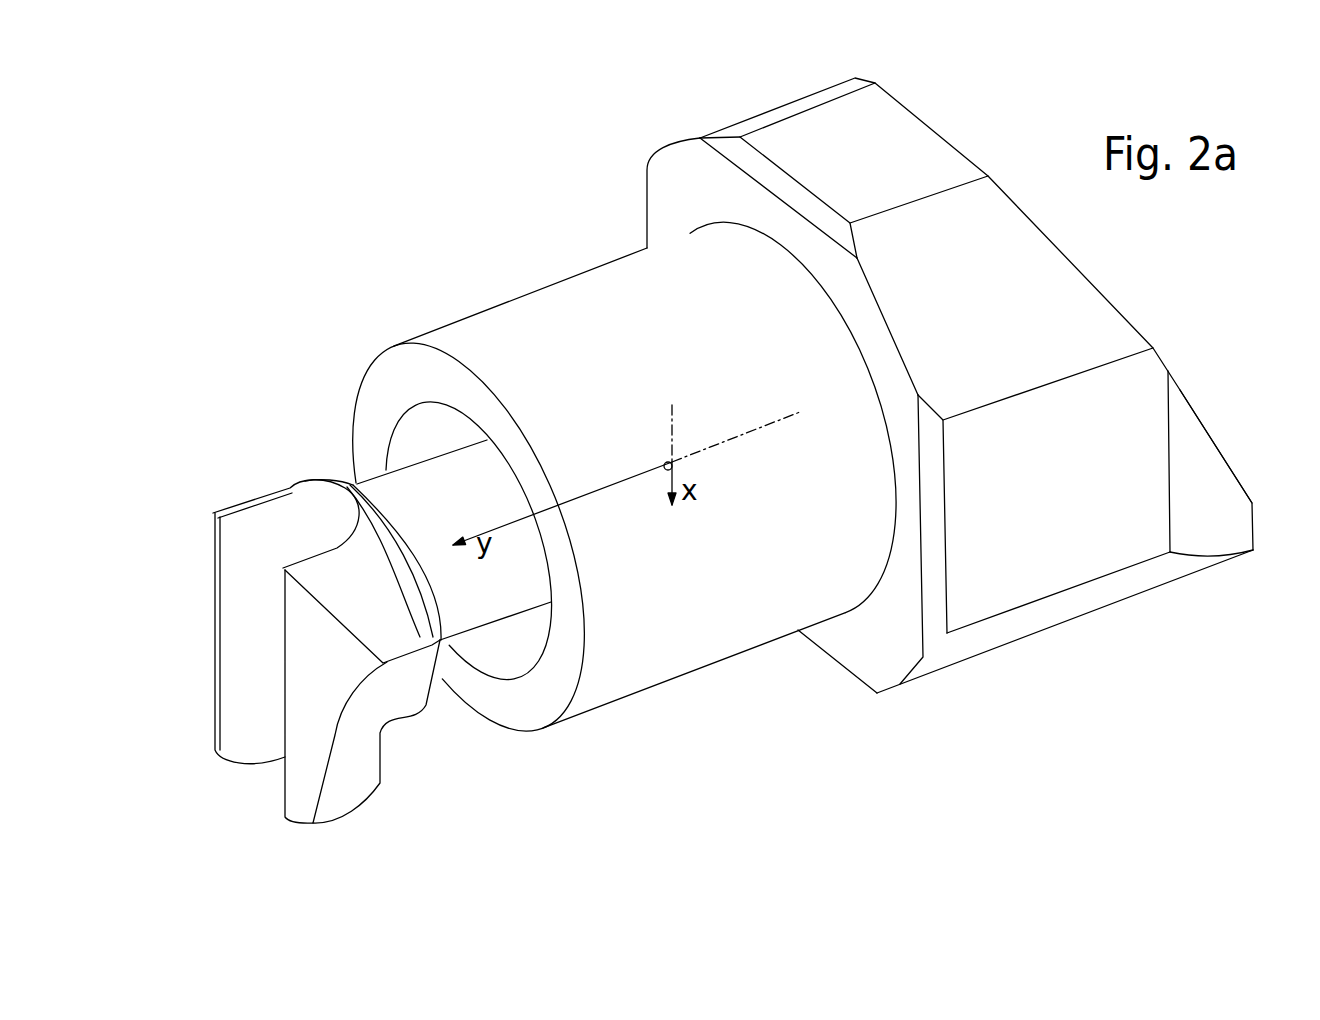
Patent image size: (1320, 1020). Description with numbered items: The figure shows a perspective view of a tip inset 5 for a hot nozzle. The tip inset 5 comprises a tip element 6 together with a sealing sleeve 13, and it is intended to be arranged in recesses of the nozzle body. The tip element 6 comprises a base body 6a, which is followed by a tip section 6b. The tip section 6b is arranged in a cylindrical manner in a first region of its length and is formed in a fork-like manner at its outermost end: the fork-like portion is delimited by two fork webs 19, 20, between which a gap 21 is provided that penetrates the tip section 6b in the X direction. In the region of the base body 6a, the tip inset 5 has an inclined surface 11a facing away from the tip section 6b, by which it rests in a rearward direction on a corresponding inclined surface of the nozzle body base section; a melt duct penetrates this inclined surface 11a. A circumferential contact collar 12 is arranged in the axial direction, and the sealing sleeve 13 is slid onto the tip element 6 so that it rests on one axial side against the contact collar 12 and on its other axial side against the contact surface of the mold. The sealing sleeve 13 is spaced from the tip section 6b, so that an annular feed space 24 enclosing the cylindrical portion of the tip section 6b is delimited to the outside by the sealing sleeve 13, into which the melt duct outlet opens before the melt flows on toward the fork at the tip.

The tip inset 5 is at (590, 268).
The tip element 6 is at (1010, 588).
The base body 6a is at (1130, 582).
The tip section 6b is at (347, 477).
The inclined surface 11a is at (1188, 388).
The contact collar 12 is at (887, 618).
The sealing sleeve 13 is at (527, 713).
The fork web 19 is at (220, 693).
The fork web 20 is at (285, 793).
The gap 21 is at (303, 535).
The annular feed space 24 is at (512, 648).